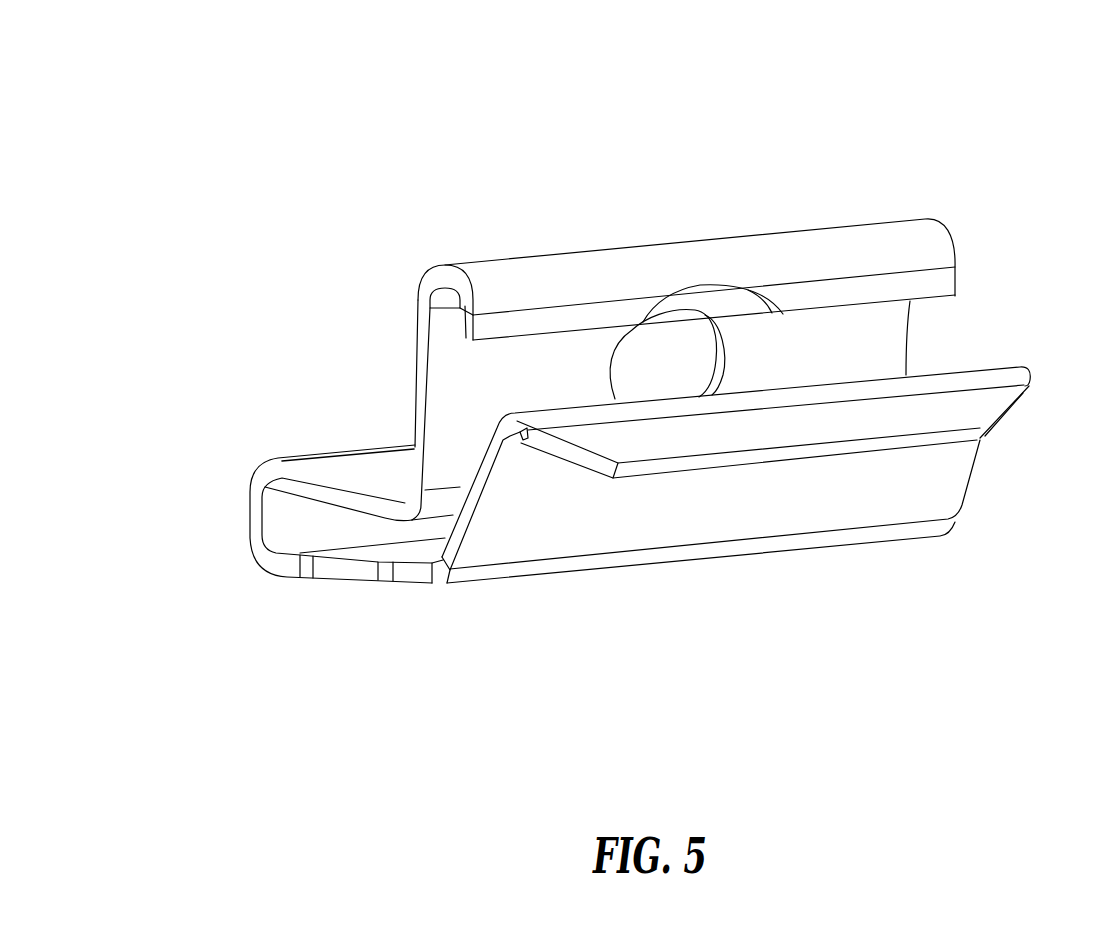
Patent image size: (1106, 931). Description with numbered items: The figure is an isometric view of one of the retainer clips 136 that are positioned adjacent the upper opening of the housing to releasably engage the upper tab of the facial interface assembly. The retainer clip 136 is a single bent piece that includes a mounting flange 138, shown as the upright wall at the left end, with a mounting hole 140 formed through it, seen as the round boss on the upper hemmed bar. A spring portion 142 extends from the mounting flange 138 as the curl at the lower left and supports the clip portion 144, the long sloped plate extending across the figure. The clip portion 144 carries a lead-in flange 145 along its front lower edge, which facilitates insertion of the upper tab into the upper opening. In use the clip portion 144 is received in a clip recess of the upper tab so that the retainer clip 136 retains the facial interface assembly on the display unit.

The retainer clip 136 is at (899, 152).
The mounting flange 138 is at (416, 285).
The mounting hole 140 is at (644, 340).
The spring portion 142 is at (250, 590).
The clip portion 144 is at (977, 362).
The lead-in flange 145 is at (963, 418).